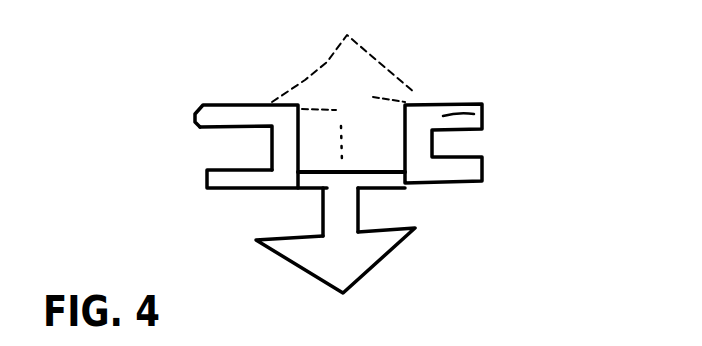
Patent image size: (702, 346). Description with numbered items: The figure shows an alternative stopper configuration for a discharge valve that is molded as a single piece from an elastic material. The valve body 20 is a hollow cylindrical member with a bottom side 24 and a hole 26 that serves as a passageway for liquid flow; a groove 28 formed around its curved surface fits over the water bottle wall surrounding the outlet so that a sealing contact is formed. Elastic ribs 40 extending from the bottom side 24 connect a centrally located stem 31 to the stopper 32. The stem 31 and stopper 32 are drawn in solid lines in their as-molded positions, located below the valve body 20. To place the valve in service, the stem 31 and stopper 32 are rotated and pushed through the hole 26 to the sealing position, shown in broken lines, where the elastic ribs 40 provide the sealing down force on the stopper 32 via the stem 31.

The valve body 20 is at (203, 106).
The bottom side 24 is at (243, 189).
The hole 26 is at (387, 150).
The groove 28 is at (448, 140).
The stem 31 is at (355, 122).
The stopper 32 is at (338, 75).
The elastic ribs 40 is at (390, 191).